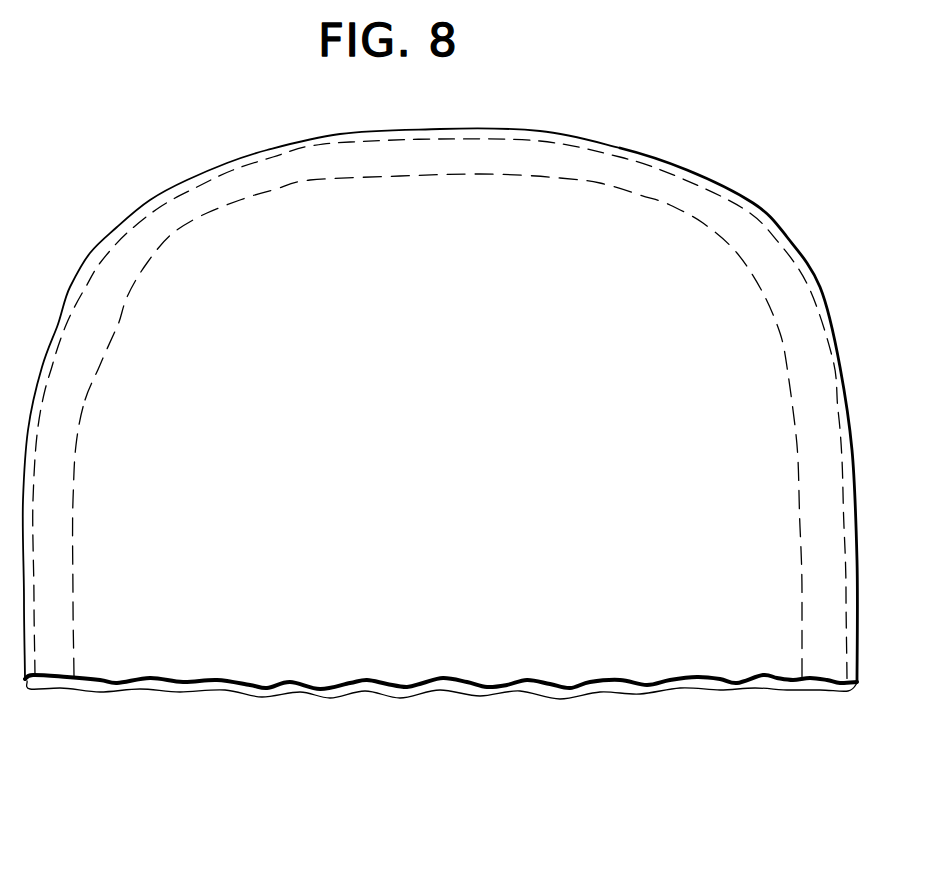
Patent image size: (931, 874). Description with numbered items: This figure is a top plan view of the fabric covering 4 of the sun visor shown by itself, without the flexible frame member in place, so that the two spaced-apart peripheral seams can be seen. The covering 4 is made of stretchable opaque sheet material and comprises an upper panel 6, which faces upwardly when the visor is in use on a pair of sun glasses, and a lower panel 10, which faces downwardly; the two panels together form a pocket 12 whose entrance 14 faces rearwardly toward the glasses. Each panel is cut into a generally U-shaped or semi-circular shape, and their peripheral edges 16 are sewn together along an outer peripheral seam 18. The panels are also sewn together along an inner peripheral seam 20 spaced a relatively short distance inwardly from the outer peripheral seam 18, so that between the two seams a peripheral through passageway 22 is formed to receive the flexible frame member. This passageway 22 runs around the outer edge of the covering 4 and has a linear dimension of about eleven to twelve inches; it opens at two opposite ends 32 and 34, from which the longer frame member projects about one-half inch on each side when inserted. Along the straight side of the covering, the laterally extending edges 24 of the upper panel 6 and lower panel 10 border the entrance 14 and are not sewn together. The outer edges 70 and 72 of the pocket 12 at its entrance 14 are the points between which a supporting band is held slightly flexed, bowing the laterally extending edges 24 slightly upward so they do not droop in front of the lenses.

The fabric covering 4 is at (600, 210).
The upper panel 6 is at (462, 678).
The lower panel 10 is at (476, 697).
The pocket 12 is at (184, 690).
The entrance 14 is at (205, 690).
The peripheral edges 16 is at (263, 148).
The outer peripheral seam 18 is at (436, 140).
The inner peripheral seam 20 is at (410, 165).
The peripheral through passageway 22 is at (50, 533).
The laterally extending edges 24 is at (362, 678).
The end of passageway 32 is at (45, 690).
The end of passageway 34 is at (821, 689).
The outer edge of the pocket 70 is at (74, 683).
The outer edge of the pocket 72 is at (786, 689).